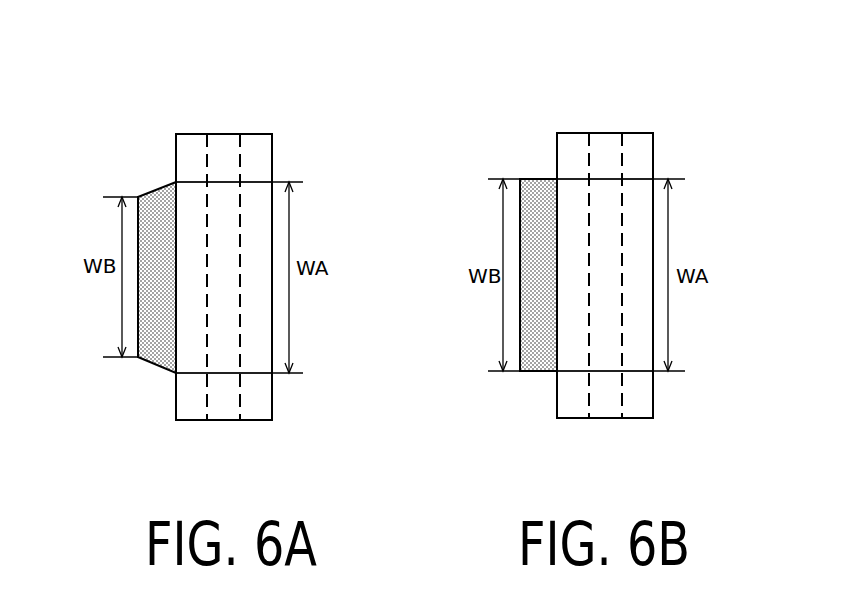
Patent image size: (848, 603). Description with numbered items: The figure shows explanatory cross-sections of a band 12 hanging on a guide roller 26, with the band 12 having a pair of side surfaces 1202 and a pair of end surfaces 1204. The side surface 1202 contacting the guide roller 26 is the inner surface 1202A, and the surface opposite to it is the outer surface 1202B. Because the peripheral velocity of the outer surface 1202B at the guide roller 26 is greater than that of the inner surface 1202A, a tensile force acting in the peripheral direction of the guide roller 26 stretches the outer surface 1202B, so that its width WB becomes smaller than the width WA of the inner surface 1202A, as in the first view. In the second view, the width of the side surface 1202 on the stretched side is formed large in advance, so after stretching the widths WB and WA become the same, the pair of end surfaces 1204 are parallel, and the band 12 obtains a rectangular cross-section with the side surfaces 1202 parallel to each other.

In FIG. 6A, the band 12 is at (157, 170).
In FIG. 6B, the band 12 is at (528, 177).
In FIG. 6A, the guide roller 26 is at (255, 130).
In FIG. 6B, the guide roller 26 is at (628, 132).
In FIG. 6B, the side surface 1202 is at (583, 292).
In FIG. 6A, the inner surface 1202A is at (177, 316).
In FIG. 6B, the inner surface 1202A is at (557, 317).
In FIG. 6A, the outer surface 1202B is at (138, 317).
In FIG. 6B, the outer surface 1202B is at (518, 319).
In FIG. 6B, the end surface 1204 is at (549, 178).